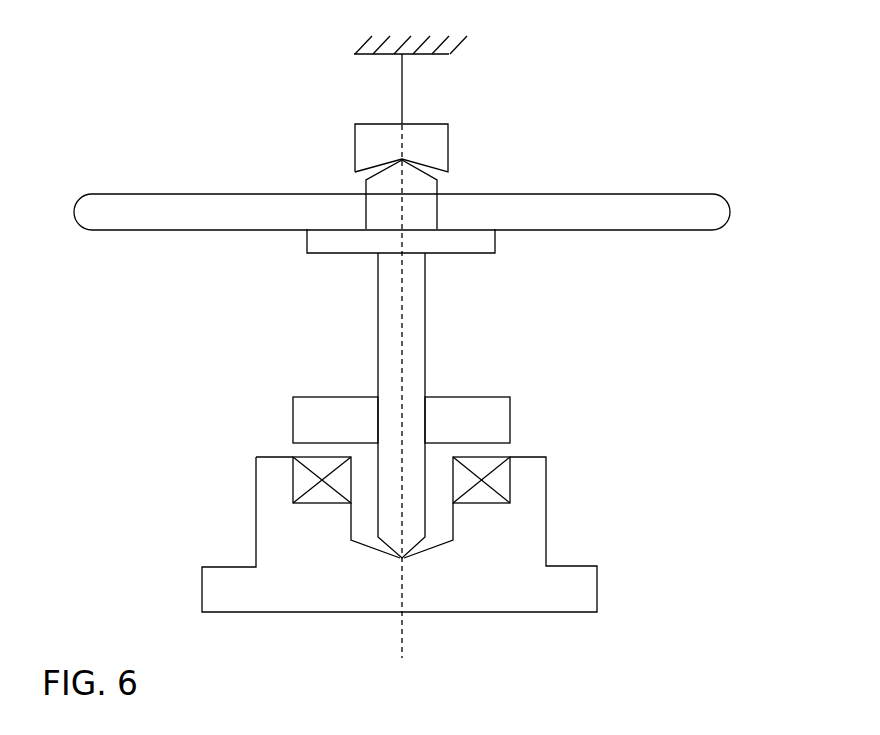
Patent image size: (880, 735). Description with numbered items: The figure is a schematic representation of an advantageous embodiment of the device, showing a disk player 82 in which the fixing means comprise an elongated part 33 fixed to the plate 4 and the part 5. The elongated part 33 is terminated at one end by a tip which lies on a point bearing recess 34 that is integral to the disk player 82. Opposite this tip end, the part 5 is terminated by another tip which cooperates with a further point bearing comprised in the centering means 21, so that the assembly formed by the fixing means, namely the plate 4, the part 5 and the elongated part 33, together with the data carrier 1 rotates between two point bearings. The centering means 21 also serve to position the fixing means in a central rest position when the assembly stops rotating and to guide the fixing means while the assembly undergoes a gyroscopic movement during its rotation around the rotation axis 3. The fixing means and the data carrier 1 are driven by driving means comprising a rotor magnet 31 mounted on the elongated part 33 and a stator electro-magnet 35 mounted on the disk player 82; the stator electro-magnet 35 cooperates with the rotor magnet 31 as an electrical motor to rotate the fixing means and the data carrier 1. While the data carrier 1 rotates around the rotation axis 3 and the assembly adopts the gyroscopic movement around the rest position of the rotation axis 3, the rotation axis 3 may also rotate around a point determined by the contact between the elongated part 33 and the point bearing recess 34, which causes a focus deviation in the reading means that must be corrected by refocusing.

The data carrier 1 is at (405, 173).
The rotation axis 3 is at (437, 398).
The plate 4 is at (470, 242).
The part 5 is at (423, 190).
The centering means 21 is at (354, 129).
The rotor magnet 31 is at (352, 399).
The elongated part 33 is at (464, 405).
The point bearing recess 34 is at (342, 626).
The stator electro-magnet 35 is at (457, 455).
The disk player 82 is at (399, 309).